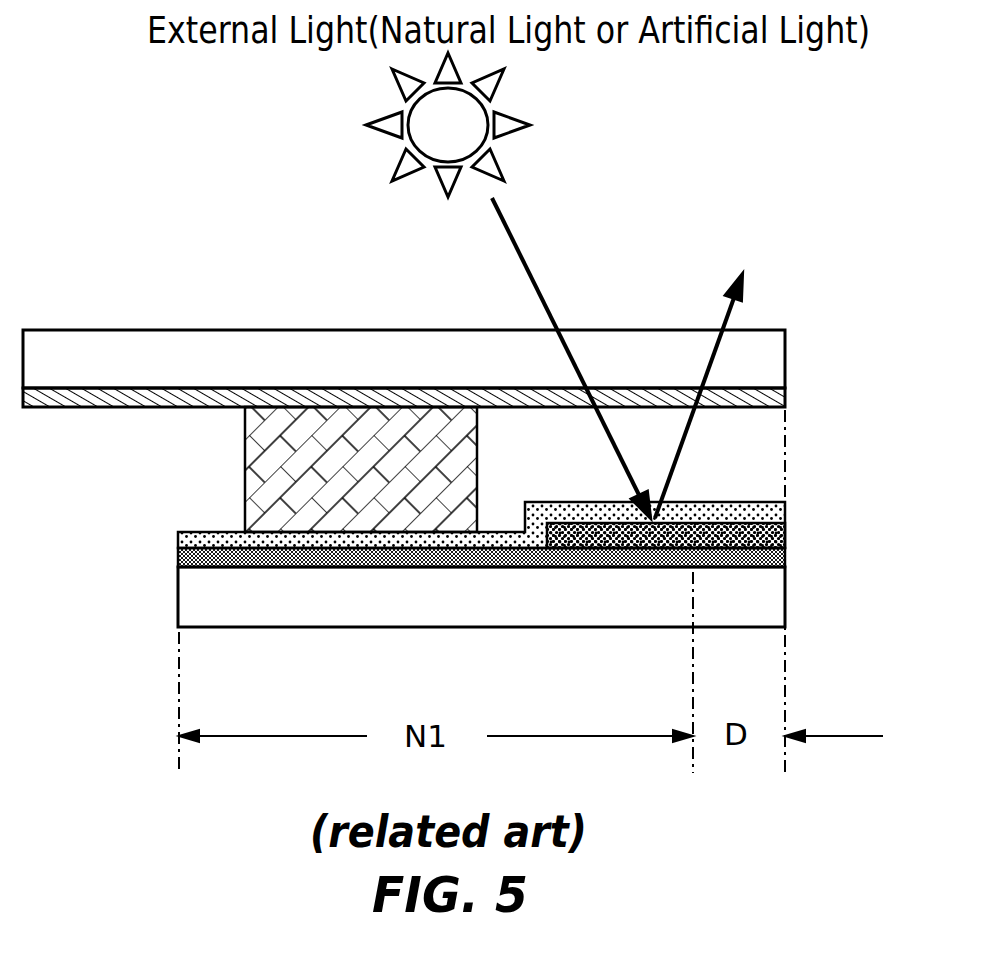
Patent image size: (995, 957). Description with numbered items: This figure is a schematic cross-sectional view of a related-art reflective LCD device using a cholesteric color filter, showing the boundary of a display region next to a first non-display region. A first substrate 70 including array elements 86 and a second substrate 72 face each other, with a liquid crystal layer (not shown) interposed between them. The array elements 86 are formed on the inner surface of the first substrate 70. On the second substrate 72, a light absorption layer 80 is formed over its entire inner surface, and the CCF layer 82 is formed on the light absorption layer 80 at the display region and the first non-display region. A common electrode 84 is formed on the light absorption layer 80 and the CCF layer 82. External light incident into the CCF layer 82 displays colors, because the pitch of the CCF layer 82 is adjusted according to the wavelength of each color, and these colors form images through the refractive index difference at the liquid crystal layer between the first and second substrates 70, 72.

The first substrate 70 is at (438, 372).
The second substrate 72 is at (447, 612).
The light absorption layer 80 is at (617, 565).
The CCF layer 82 is at (723, 565).
The common electrode 84 is at (493, 565).
The array elements 86 is at (83, 410).